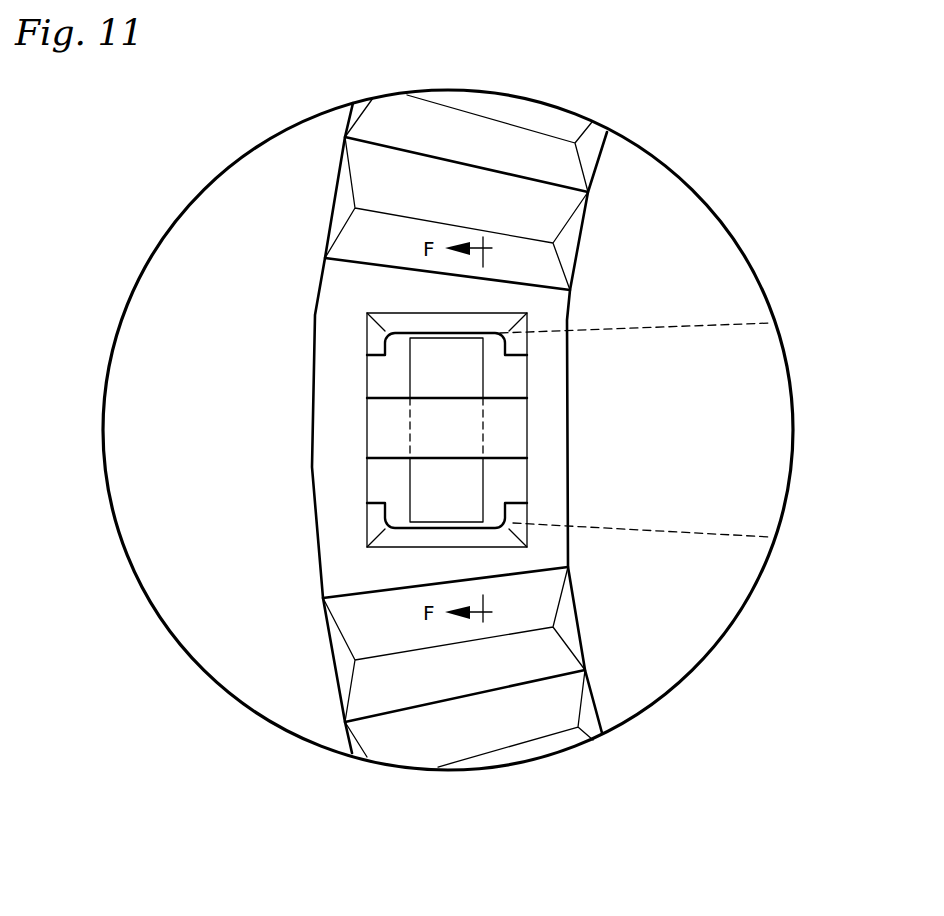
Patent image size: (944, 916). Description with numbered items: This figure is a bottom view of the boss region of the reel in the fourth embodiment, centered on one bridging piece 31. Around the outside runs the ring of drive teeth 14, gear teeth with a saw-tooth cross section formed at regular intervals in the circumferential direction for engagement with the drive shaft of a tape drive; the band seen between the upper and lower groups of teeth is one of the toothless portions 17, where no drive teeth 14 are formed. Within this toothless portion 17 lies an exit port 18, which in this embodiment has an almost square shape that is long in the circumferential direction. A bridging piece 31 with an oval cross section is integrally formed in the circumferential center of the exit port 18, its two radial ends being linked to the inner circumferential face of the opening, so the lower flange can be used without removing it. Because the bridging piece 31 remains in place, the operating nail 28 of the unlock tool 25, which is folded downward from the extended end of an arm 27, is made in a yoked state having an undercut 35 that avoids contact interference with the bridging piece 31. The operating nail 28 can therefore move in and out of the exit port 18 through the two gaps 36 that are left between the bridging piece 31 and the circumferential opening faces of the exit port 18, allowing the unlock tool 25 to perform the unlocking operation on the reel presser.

The drive teeth 14 is at (523, 215).
The toothless portion 17 is at (325, 520).
The exit port 18 is at (377, 376).
The unlock tool 25 is at (721, 316).
The arm 27 is at (677, 532).
The operating nail 28 is at (408, 482).
The bridging piece 31 is at (383, 432).
The undercut 35 is at (463, 460).
The gap 36 is at (402, 348).